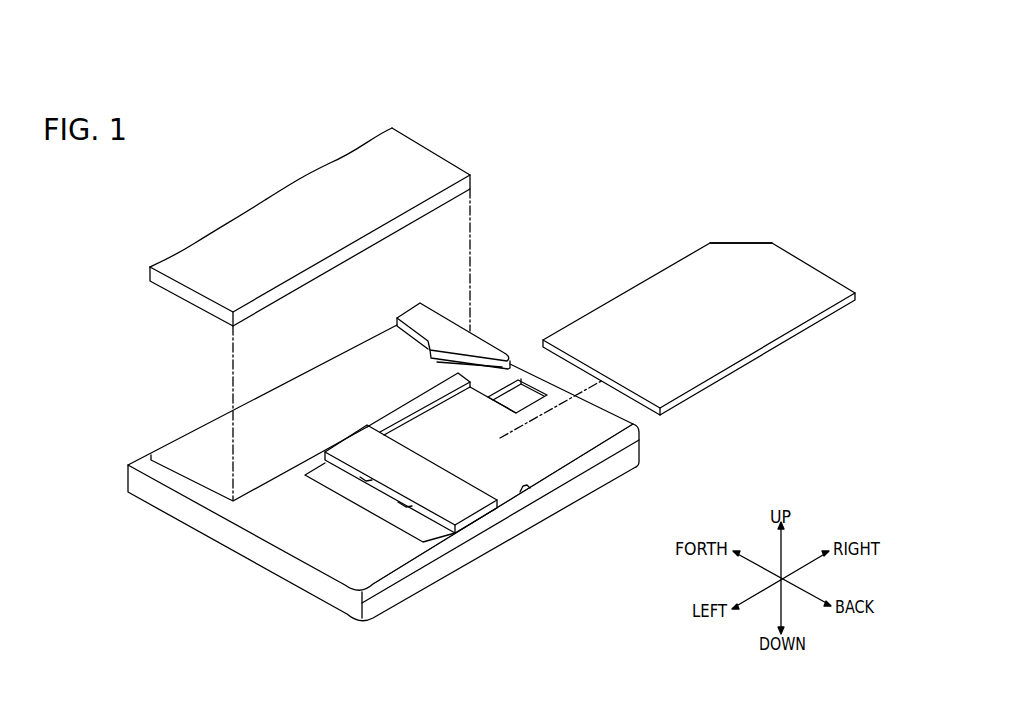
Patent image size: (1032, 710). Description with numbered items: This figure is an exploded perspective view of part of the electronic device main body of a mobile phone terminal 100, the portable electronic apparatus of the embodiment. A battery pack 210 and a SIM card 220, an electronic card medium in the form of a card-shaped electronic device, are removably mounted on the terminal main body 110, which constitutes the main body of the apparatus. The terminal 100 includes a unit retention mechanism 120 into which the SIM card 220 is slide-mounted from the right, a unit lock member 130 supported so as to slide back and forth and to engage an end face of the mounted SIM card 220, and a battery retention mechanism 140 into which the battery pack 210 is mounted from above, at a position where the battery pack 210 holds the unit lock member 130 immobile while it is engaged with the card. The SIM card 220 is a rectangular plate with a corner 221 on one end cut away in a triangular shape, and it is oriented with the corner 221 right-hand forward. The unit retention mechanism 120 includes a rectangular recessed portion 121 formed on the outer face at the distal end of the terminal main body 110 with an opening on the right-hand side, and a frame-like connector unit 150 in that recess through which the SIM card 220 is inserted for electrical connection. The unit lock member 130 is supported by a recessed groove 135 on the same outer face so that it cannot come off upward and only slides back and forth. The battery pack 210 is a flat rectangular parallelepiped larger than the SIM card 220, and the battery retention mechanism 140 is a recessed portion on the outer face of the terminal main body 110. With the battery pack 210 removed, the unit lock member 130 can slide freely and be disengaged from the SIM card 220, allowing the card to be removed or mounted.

The mobile phone terminal 100 is at (793, 172).
The terminal main body 110 is at (602, 477).
The unit retention mechanism 120 is at (534, 463).
The recessed portion 121 is at (528, 486).
The unit lock member 130 is at (472, 347).
The recessed groove 135 is at (518, 396).
The battery retention mechanism 140 is at (310, 398).
The connector unit 150 is at (472, 502).
The battery pack 210 is at (427, 153).
The SIM card 220 is at (798, 273).
The corner 221 is at (737, 243).